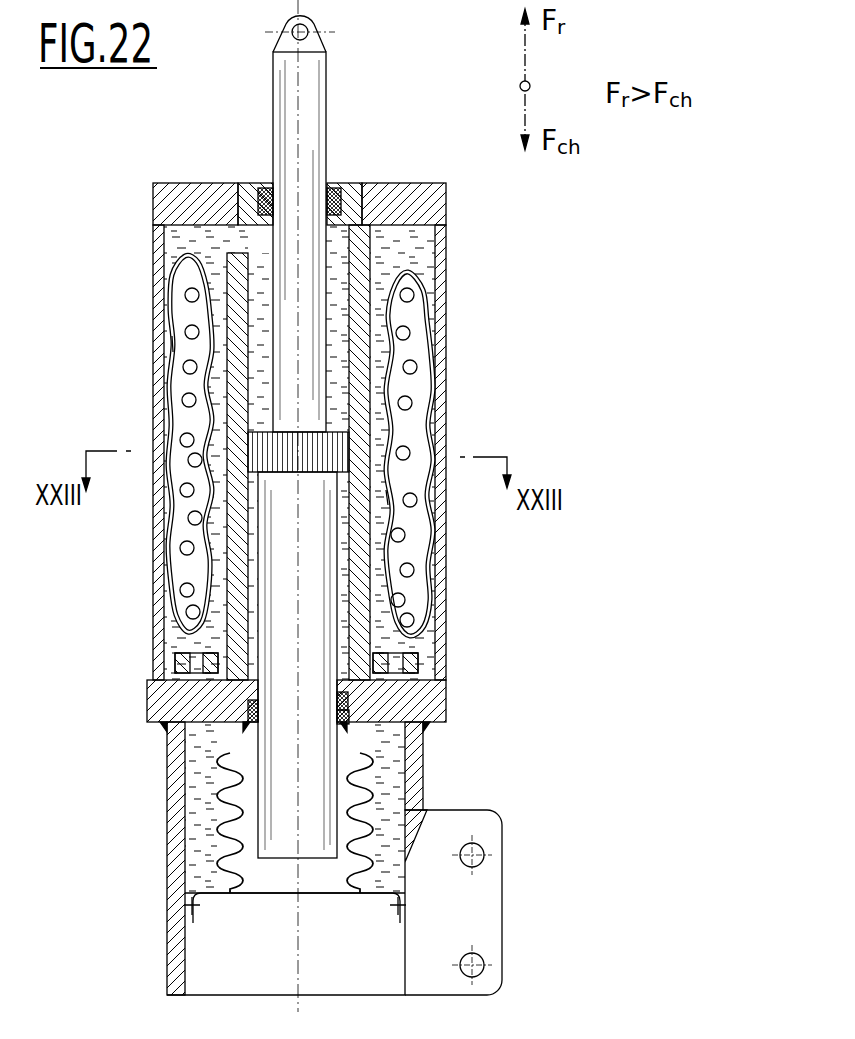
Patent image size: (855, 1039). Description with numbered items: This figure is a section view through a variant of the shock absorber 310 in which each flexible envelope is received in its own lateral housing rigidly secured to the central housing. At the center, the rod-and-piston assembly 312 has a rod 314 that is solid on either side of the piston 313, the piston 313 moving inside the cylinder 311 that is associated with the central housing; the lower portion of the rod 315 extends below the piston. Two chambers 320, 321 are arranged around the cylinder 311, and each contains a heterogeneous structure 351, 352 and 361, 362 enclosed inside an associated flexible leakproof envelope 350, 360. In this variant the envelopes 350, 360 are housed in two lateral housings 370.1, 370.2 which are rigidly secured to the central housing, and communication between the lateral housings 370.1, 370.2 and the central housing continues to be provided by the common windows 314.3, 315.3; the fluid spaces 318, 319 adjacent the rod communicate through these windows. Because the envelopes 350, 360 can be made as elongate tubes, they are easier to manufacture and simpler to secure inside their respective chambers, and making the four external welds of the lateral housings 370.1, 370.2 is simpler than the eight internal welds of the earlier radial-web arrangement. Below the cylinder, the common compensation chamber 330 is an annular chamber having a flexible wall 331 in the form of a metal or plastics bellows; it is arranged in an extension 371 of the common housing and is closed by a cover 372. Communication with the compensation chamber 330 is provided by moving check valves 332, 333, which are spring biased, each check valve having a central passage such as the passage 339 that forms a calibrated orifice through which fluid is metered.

The shock absorber 310 is at (130, 232).
The cylinder 311 is at (357, 370).
The rod-and-piston assembly 312 is at (274, 96).
The piston 313 is at (335, 450).
The piston rod 314 is at (317, 138).
The common window 314.3 is at (237, 243).
The lower tube 315 is at (277, 820).
The common window 315.3 is at (376, 730).
The upper fluid chamber 318 is at (337, 298).
The lower chamber 319 is at (252, 550).
The chamber 320 is at (232, 392).
The chamber 321 is at (445, 520).
The common compensation chamber 330 is at (423, 765).
The flexible wall 331 is at (432, 787).
The check valve 332 is at (180, 663).
The check valve 333 is at (350, 700).
The central passage 339 is at (418, 663).
The flexible leakproof envelope 350 is at (175, 312).
The heterogeneous structure 351 is at (175, 350).
The heterogeneous structure 352 is at (160, 535).
The flexible leakproof envelope 360 is at (433, 318).
The heterogeneous structure 361 is at (430, 627).
The heterogeneous structure 362 is at (385, 497).
The lateral housing 370.1 is at (158, 428).
The lateral housing 370.2 is at (437, 573).
The extension 371 is at (177, 893).
The cover 372 is at (268, 897).